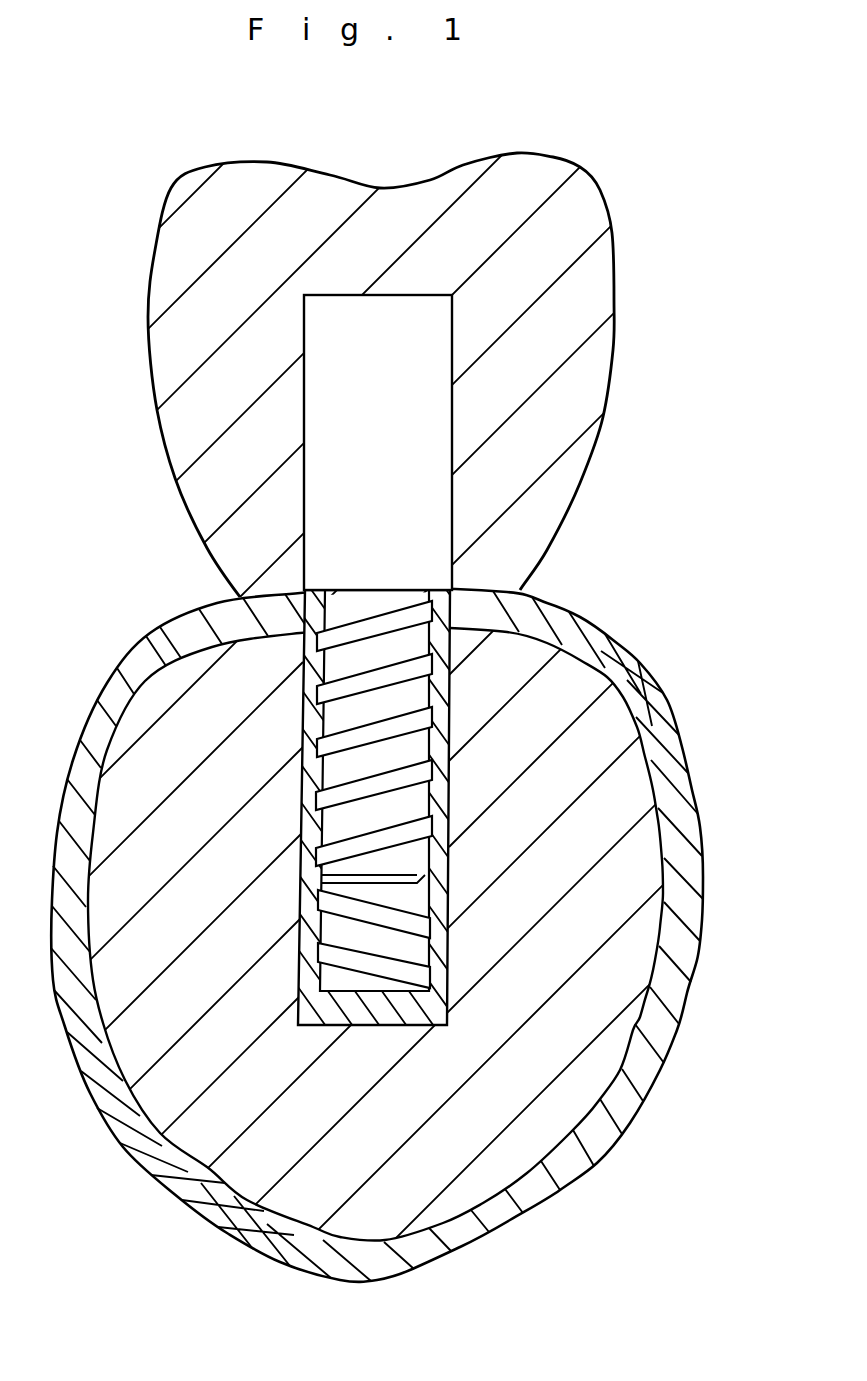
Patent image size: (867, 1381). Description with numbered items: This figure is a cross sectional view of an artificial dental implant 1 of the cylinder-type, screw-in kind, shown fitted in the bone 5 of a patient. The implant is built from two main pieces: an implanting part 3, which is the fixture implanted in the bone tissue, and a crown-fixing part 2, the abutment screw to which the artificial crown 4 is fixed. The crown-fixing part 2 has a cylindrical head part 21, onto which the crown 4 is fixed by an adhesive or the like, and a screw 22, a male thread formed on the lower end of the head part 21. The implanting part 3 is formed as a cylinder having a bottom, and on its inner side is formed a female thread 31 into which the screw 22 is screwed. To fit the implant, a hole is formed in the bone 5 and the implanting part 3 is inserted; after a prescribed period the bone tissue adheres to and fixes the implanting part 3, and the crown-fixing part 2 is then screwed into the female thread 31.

The artificial dental implant 1 is at (433, 690).
The crown-fixing part 2 is at (518, 643).
The head part 21 is at (398, 427).
The screw 22 is at (393, 676).
The implanting part 3 is at (433, 690).
The female thread 31 is at (392, 917).
The crown 4 is at (558, 337).
The bone 5 is at (606, 1183).